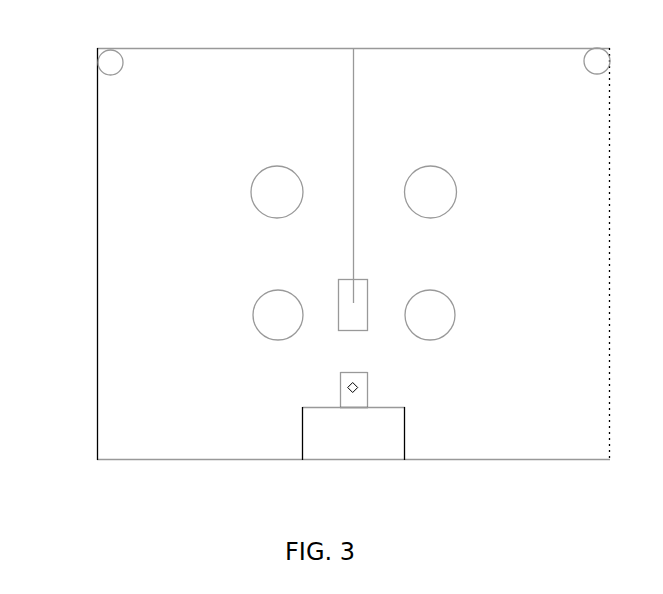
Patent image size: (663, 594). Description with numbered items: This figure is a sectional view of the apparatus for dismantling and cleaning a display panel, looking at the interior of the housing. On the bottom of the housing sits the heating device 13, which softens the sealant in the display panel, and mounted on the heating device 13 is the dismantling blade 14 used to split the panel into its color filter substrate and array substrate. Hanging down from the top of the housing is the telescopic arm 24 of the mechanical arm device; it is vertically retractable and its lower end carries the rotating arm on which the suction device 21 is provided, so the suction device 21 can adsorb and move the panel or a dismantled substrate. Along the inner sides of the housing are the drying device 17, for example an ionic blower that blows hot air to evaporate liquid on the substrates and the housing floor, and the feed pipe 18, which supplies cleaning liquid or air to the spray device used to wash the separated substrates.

The heating device 13 is at (406, 433).
The dismantling blade 14 is at (358, 389).
The drying device 17 is at (251, 192).
The feed pipe 18 is at (109, 63).
The suction device 21 is at (368, 303).
The telescopic arm 24 is at (354, 151).